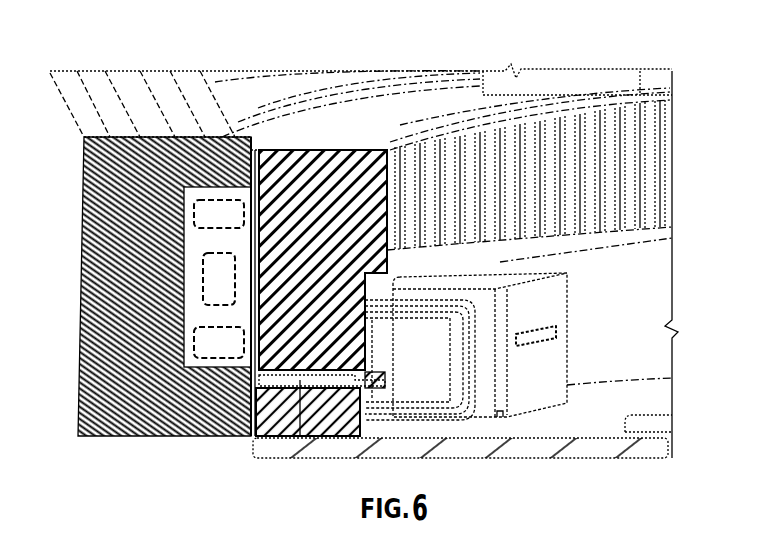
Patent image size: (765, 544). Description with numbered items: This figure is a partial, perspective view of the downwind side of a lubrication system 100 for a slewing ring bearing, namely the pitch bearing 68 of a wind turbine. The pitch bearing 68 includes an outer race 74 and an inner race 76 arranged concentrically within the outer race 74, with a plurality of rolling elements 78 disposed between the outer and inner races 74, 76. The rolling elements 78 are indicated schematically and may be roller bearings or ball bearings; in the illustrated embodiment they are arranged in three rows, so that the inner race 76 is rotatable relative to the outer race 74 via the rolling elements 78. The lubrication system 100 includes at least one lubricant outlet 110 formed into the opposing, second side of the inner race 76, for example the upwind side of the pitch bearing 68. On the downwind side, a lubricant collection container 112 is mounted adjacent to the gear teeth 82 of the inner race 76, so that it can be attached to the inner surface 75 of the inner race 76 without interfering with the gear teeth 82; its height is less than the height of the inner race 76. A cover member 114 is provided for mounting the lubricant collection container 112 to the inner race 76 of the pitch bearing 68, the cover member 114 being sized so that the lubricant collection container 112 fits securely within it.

The pitch bearing 68 is at (167, 126).
The outer race 74 is at (92, 200).
The inner surface 75 is at (672, 238).
The inner race 76 is at (350, 150).
The rolling elements 78 is at (194, 214).
The gear teeth 82 is at (648, 158).
The lubrication system 100 is at (625, 312).
The lubricant outlet 110 is at (300, 382).
The lubricant collection container 112 is at (570, 370).
The cover member 114 is at (522, 388).